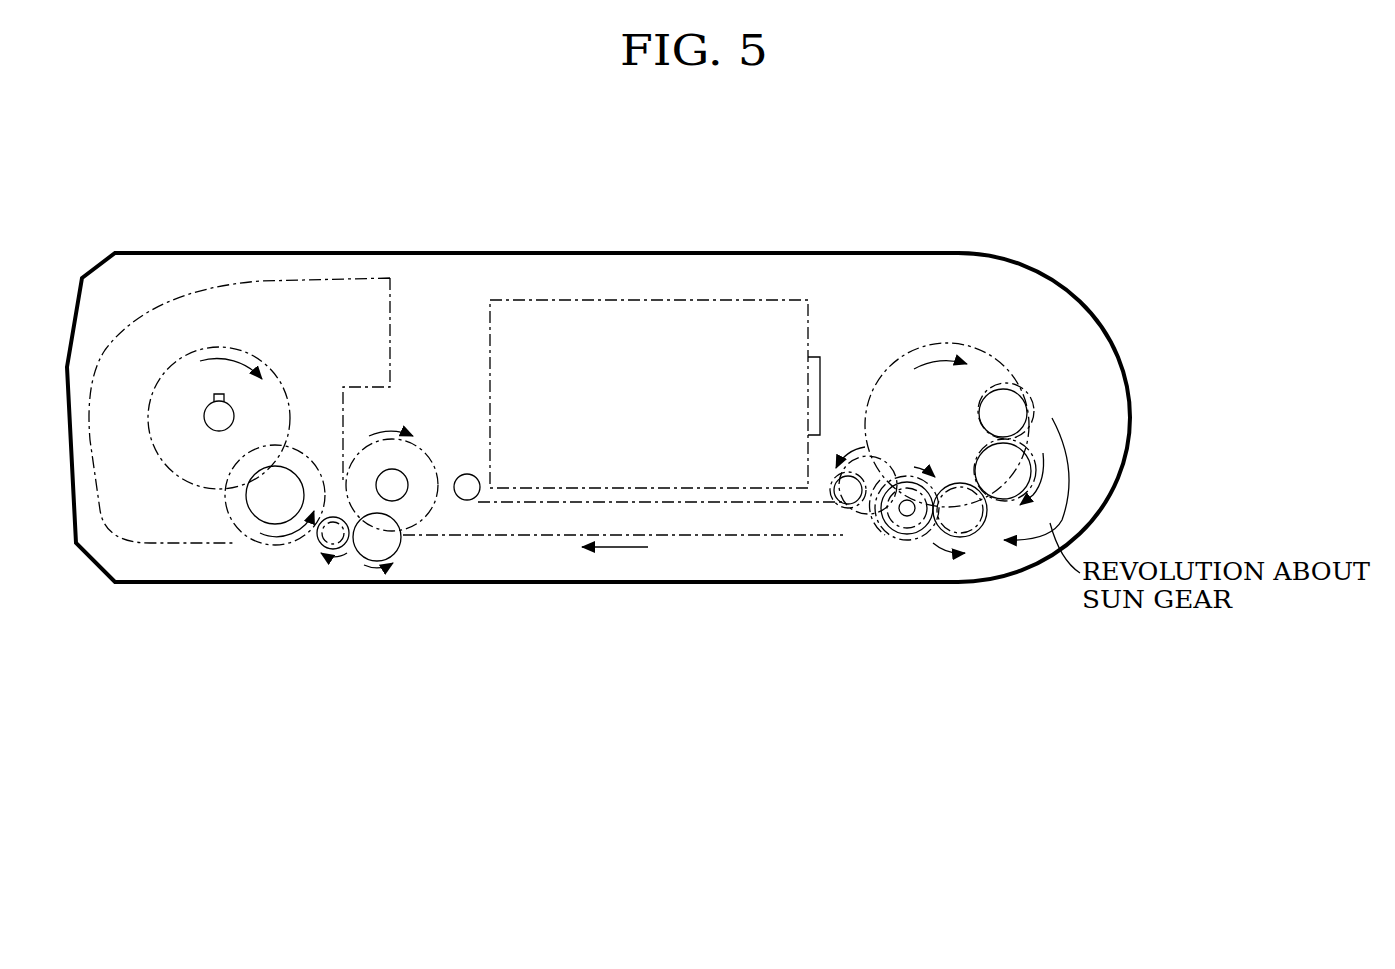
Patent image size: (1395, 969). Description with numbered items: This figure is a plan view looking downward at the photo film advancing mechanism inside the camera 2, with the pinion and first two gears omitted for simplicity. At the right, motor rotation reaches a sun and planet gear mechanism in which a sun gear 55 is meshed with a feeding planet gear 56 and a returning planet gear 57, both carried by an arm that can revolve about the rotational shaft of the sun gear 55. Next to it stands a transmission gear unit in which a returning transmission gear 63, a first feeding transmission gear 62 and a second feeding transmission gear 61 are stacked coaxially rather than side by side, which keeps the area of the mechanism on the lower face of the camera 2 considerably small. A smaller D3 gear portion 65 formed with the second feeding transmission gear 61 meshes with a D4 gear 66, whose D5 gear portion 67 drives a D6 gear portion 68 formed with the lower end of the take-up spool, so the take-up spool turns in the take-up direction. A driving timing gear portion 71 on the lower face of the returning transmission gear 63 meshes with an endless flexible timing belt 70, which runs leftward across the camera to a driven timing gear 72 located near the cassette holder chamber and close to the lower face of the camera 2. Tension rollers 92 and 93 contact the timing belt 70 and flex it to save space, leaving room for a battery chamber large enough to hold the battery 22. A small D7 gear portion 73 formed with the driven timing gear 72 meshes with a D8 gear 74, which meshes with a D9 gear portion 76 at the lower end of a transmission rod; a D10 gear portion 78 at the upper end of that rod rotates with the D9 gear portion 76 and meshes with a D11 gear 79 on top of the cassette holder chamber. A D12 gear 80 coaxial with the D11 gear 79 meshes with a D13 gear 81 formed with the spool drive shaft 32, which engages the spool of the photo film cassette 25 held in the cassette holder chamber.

The camera 2 is at (842, 233).
The battery 22 is at (655, 300).
The photo film cassette 25 is at (290, 262).
The spool drive shaft 32 is at (205, 410).
The D13 gear 81 is at (265, 358).
The D12 gear 80 is at (242, 512).
The D11 gear 79 is at (263, 545).
The D9 gear portion 76 is at (333, 533).
The D10 gear portion 78 is at (342, 560).
The D8 gear 74 is at (401, 552).
The D7 gear portion 73 is at (410, 500).
The driven timing gear 72 is at (428, 505).
The tension roller 93 is at (480, 473).
The tension roller 92 is at (833, 485).
The timing belt 70 is at (690, 535).
The driving timing gear portion 71 is at (875, 518).
The returning transmission gear 63 is at (895, 522).
The second feeding transmission gear 61 is at (907, 508).
The first feeding transmission gear 62 is at (915, 522).
The D3 gear portion 65 is at (907, 516).
The feeding planet gear 56 is at (975, 535).
The sun gear 55 is at (1053, 440).
The returning planet gear 57 is at (1030, 397).
The D4 gear 66 is at (875, 470).
The D5 gear portion 67 is at (868, 470).
The D6 gear portion 68 is at (907, 350).